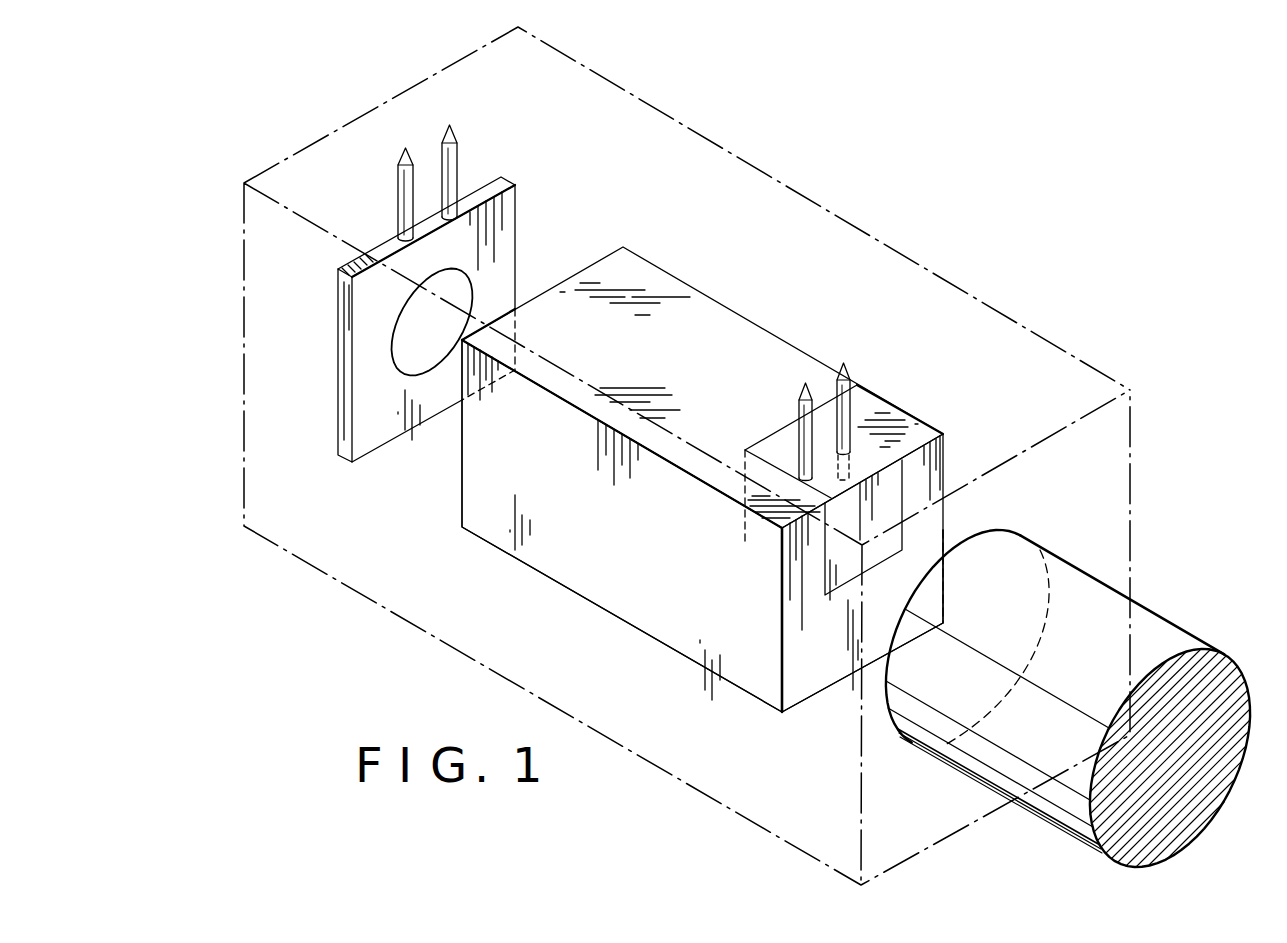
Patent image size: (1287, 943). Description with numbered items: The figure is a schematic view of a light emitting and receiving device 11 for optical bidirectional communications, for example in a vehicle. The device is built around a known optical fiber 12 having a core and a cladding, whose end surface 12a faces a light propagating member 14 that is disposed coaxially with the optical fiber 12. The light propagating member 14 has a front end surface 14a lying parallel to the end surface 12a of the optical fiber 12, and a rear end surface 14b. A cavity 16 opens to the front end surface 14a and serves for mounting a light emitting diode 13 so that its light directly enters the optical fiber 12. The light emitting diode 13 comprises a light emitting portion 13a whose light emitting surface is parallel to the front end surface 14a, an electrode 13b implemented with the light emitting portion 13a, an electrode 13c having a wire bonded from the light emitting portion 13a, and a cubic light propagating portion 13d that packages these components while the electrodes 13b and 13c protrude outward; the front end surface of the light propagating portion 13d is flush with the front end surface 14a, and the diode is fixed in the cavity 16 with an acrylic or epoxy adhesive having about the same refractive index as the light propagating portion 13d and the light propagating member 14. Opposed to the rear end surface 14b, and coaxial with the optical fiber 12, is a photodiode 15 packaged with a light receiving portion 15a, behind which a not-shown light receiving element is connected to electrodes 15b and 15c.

The light emitting and receiving device 11 is at (778, 181).
The optical fiber 12 is at (1143, 614).
The end surface of the optical fiber 12a is at (960, 537).
The light emitting diode 13 is at (773, 452).
The light emitting portion 13a is at (790, 497).
The electrode 13b is at (810, 382).
The electrode 13c is at (851, 391).
The light propagating portion 13d is at (828, 568).
The light propagating member 14 is at (622, 621).
The front end surface of the light propagating member 14a is at (793, 650).
The rear end surface of the light propagating member 14b is at (462, 450).
The photodiode 15 is at (338, 312).
The light receiving portion 15a is at (457, 285).
The electrode 15b is at (397, 174).
The electrode 15c is at (458, 152).
The cavity 16 is at (862, 578).